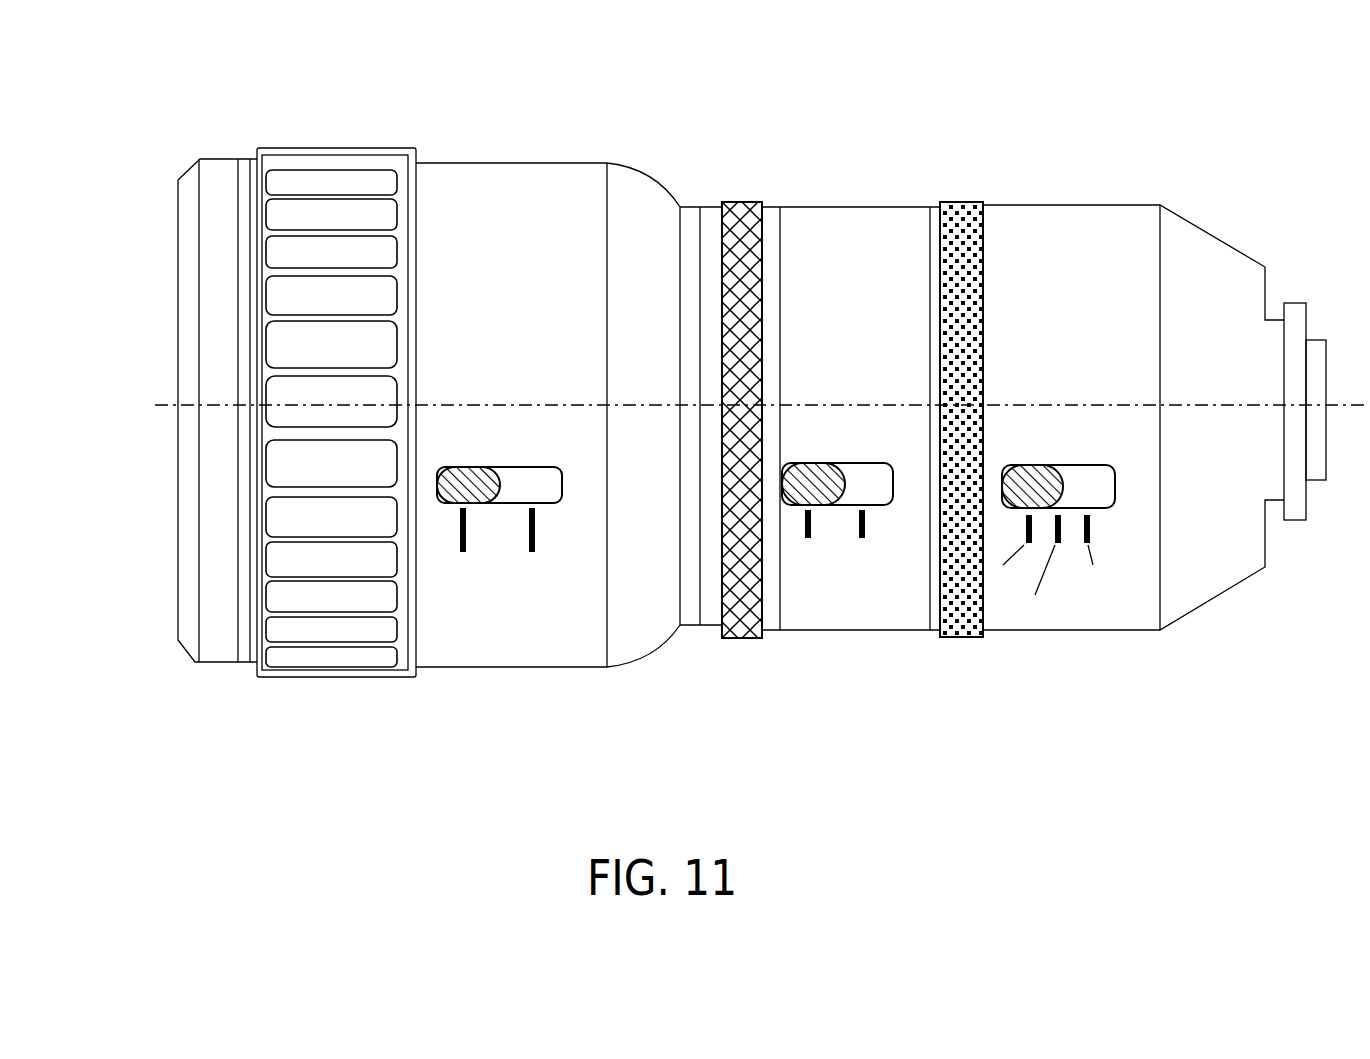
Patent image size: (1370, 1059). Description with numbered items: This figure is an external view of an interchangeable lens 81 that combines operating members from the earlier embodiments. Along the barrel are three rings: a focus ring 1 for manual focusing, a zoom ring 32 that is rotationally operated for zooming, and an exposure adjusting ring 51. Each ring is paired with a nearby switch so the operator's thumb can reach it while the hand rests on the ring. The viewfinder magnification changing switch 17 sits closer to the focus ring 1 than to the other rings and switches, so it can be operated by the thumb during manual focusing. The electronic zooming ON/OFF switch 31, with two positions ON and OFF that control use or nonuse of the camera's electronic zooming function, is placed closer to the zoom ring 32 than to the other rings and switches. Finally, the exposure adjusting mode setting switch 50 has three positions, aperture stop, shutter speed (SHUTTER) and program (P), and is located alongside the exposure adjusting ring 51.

The focus ring 1 is at (317, 502).
The viewfinder magnification changing switch 17 is at (500, 417).
The electronic zooming ON/OFF switch 31 is at (822, 420).
The zoom ring 32 is at (742, 630).
The exposure adjusting mode setting switch 50 is at (1063, 420).
The exposure adjusting ring 51 is at (975, 630).
The interchangeable lens 81 is at (663, 140).